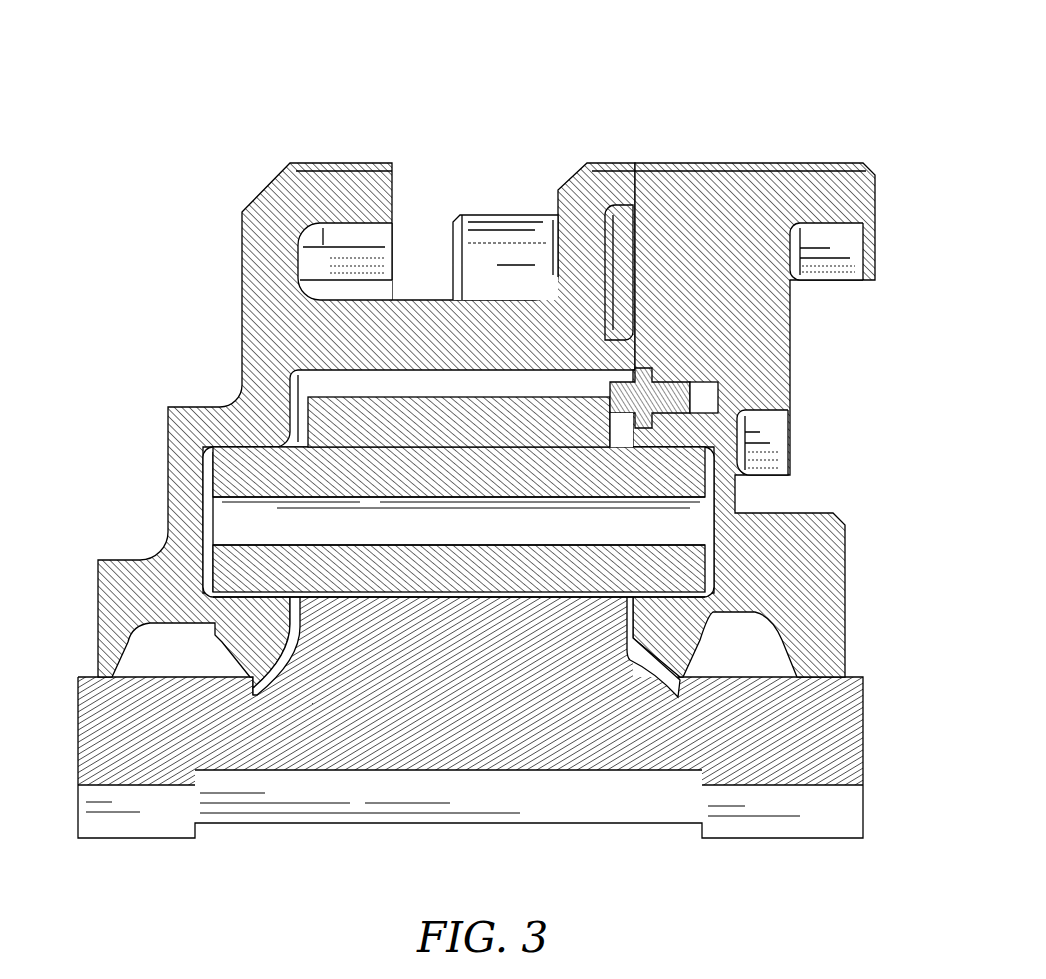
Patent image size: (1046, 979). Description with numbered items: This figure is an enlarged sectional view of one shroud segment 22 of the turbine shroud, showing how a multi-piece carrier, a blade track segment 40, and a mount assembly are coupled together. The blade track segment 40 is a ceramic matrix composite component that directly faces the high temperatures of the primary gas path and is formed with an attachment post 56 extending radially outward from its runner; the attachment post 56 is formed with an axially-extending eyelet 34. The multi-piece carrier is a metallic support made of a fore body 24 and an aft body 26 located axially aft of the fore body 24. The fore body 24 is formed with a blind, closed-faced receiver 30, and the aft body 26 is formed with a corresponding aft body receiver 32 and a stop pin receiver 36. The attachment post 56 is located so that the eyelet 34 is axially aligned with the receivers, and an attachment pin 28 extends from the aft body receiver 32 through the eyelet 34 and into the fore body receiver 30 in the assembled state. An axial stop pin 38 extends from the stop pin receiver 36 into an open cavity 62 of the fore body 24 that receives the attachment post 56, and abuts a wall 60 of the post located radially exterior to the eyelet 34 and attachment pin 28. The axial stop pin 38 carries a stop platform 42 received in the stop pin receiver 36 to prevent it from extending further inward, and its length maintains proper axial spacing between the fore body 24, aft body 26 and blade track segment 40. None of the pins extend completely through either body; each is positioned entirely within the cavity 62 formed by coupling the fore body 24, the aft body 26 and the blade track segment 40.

The shroud segment 22 is at (179, 119).
The fore body 24 is at (196, 266).
The aft body 26 is at (841, 336).
The attachment pin 28 is at (194, 553).
The closed-faced receiver 30 is at (194, 487).
The aft body receiver 32 is at (724, 522).
The eyelet 34 is at (543, 416).
The stop pin receiver 36 is at (732, 397).
The axial stop pin 38 is at (682, 360).
The blade track segment 40 is at (66, 807).
The stop platform 42 is at (647, 349).
The attachment post 56 is at (388, 665).
The wall 60 is at (636, 438).
The cavity 62 is at (384, 376).